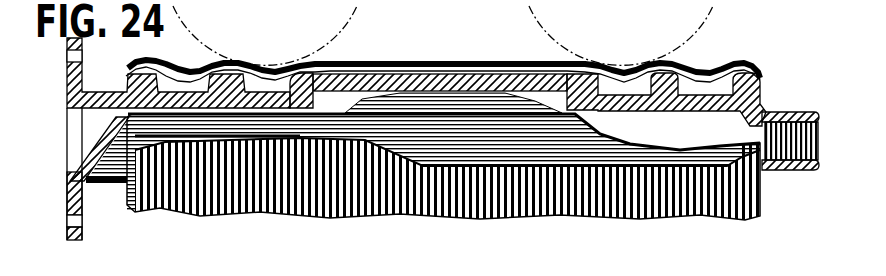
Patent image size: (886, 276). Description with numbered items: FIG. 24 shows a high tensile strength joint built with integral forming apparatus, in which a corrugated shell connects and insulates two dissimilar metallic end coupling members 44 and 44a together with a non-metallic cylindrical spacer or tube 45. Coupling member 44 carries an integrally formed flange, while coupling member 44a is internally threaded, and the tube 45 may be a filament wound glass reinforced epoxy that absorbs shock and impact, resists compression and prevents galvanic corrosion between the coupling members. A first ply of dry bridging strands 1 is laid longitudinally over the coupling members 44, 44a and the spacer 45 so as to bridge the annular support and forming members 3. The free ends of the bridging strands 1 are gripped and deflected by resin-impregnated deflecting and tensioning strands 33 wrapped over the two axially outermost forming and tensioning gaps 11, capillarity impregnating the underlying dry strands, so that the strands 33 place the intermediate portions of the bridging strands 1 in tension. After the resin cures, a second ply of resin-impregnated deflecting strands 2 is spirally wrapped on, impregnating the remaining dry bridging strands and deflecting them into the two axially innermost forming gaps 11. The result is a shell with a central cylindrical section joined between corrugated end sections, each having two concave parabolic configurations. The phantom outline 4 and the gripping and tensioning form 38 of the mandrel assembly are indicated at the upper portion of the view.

The bridging strands 1 is at (130, 68).
The deflecting strands 2 is at (255, 70).
The annular support and forming members 3 is at (313, 64).
The cylindrical surface (phantom) 4 is at (180, 17).
The forming and tensioning gaps 11 is at (690, 113).
The deflecting and tensioning strands 33 is at (742, 64).
The gripping and tensioning form 38 is at (814, 0).
The coupling member 44 is at (67, 178).
The coupling member 44a is at (797, 109).
The cylindrical spacer or tube 45 is at (538, 74).